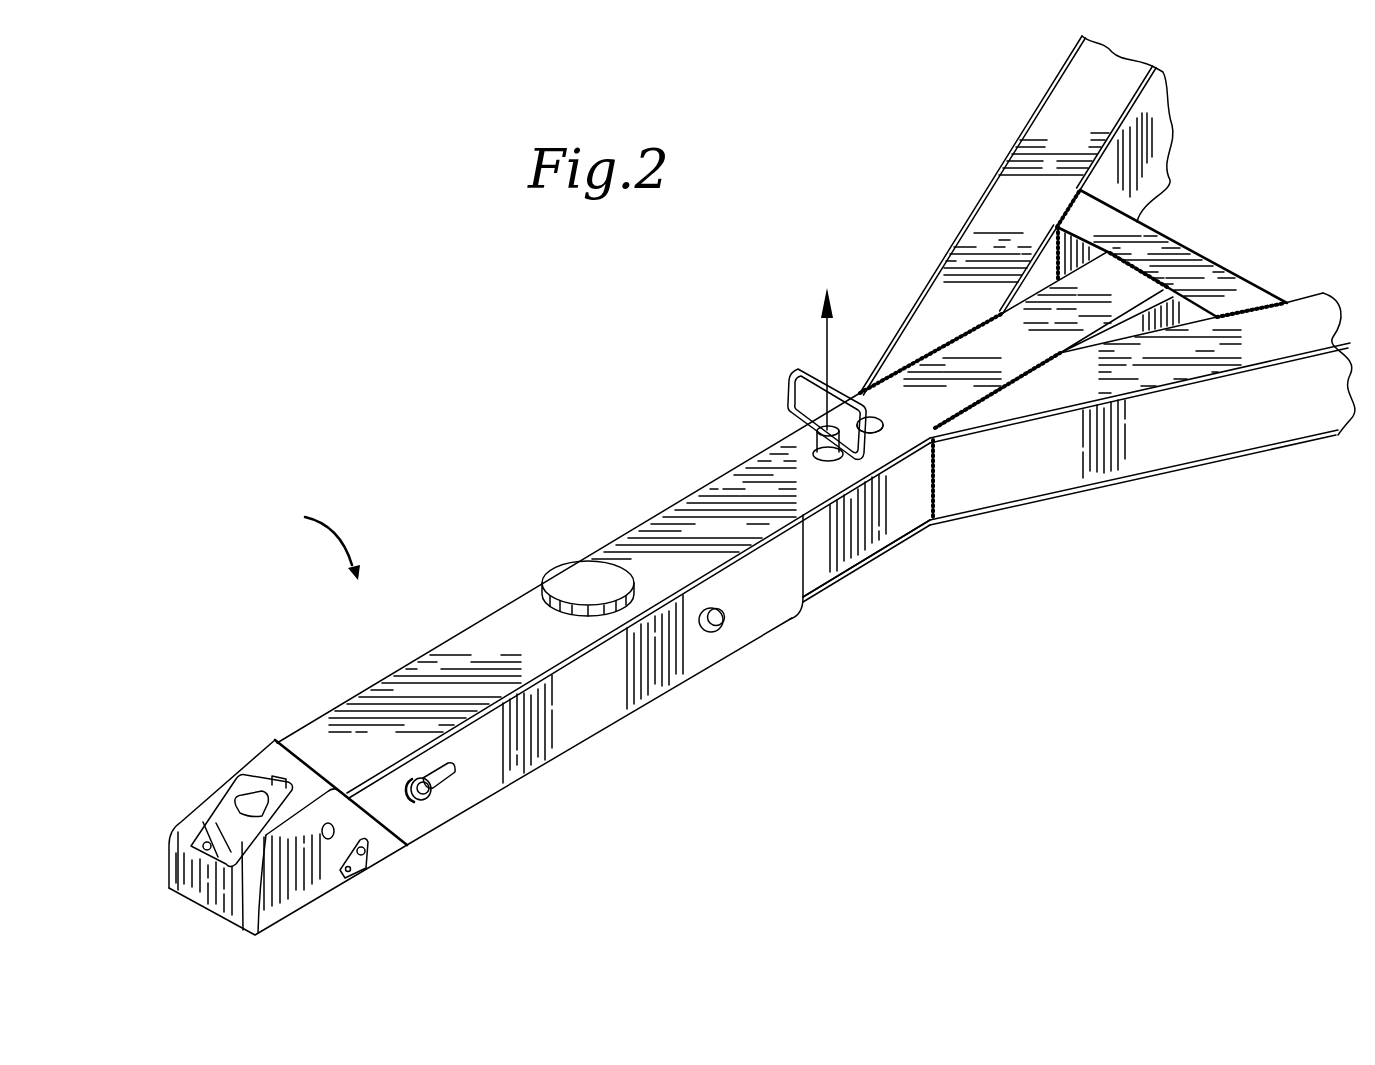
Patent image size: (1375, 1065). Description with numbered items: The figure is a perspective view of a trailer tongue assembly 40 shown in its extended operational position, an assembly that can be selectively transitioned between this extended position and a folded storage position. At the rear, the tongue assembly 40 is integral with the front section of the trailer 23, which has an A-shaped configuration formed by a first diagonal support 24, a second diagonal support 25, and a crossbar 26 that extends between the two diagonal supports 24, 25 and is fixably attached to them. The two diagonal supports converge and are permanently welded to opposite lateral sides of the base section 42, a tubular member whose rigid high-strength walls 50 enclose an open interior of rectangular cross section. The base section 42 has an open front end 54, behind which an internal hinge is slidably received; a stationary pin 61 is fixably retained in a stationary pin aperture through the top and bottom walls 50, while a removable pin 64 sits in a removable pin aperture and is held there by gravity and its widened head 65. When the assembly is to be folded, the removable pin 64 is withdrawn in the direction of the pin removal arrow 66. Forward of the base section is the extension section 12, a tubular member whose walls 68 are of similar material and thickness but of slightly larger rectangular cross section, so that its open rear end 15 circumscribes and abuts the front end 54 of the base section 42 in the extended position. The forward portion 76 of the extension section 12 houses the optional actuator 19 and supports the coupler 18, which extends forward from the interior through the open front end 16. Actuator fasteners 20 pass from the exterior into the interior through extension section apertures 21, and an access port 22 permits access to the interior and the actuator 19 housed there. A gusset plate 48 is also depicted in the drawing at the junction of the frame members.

The extension section 12 is at (492, 643).
The rear end 15 is at (718, 500).
The front end 16 is at (318, 750).
The coupler 18 is at (277, 910).
The actuator 19 is at (447, 777).
The actuator fasteners 20 is at (725, 623).
The extension section apertures 21 is at (427, 787).
The access port 22 is at (540, 585).
The front section of the trailer 23 is at (968, 215).
The first diagonal support 24 is at (1170, 433).
The second diagonal support 25 is at (1058, 118).
The crossbar 26 is at (1207, 290).
The tongue assembly 40 is at (311, 544).
The base section 42 is at (893, 393).
The gusset plate 48 is at (1110, 285).
The walls 50 is at (875, 530).
The front end 54 is at (813, 553).
The stationary pin 61 is at (895, 412).
The removable pin 64 is at (800, 432).
The widened head 65 is at (792, 460).
The pin removal arrow 66 is at (825, 345).
The walls 68 is at (592, 710).
The forward portion 76 is at (385, 700).